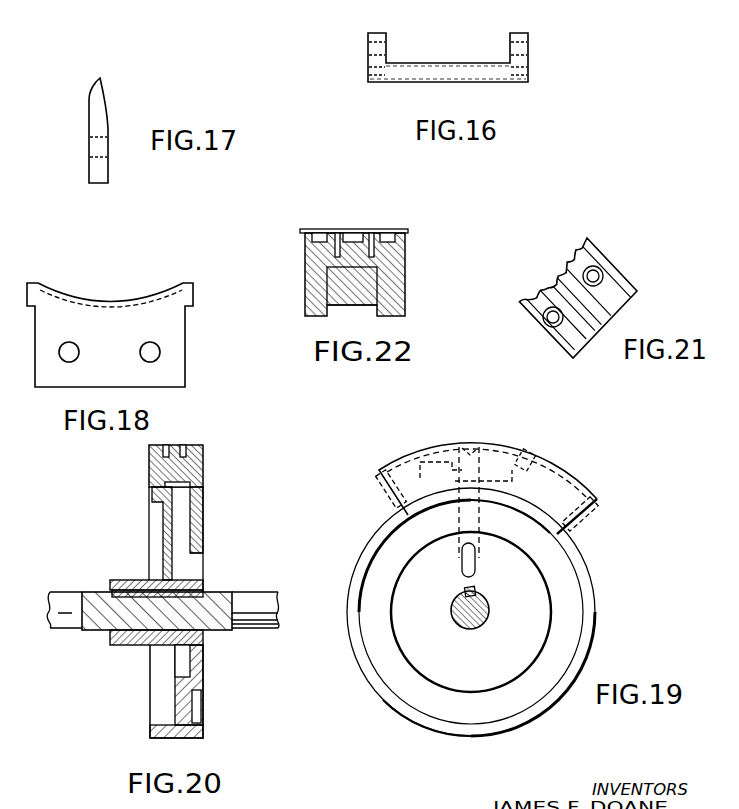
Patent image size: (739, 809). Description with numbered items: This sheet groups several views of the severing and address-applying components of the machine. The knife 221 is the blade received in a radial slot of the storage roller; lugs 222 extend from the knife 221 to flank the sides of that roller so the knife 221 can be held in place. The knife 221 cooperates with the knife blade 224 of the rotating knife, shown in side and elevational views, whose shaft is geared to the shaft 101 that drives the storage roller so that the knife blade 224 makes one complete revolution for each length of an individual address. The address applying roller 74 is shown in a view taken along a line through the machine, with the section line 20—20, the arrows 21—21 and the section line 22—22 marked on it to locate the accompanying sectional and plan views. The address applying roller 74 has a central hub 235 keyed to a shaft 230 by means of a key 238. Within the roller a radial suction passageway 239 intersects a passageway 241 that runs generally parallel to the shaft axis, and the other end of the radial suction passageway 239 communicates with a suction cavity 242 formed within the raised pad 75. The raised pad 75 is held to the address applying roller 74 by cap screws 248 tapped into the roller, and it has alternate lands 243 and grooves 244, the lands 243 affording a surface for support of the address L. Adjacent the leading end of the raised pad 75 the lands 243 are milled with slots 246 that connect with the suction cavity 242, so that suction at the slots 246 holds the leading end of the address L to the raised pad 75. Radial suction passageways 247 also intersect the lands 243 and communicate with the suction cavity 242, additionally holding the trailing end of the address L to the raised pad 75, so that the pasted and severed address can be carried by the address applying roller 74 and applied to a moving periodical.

In FIG. 16, the knife 221 is at (432, 63).
In FIG. 16, the lugs 222 is at (528, 36).
In FIG. 17, the knife blade 224 is at (100, 183).
In FIG. 18, the knife blade 224 is at (158, 381).
In FIG. 22, the lands 243 is at (320, 232).
In FIG. 22, the grooves 244 is at (330, 232).
In FIG. 22, the address L is at (392, 228).
In FIG. 21, the cap screws 248 is at (603, 274).
In FIG. 19, the cap screws 248 is at (395, 492).
In FIG. 20, the radial suction passageway 239 is at (190, 528).
In FIG. 19, the radial suction passageway 239 is at (478, 514).
In FIG. 20, the passageway 241 is at (205, 566).
In FIG. 19, the passageway 241 is at (473, 573).
In FIG. 20, the key 238 is at (206, 592).
In FIG. 19, the key 238 is at (478, 588).
In FIG. 20, the central hub 235 is at (128, 648).
In FIG. 20, the shaft 101 is at (258, 632).
In FIG. 19, the raised pad 75 is at (423, 462).
In FIG. 19, the slots 246 is at (470, 446).
In FIG. 19, the radial suction passageways 247 is at (528, 453).
In FIG. 19, the suction cavity 242 is at (457, 475).
In FIG. 19, the shaft 230 is at (483, 622).
In FIG. 19, the address applying roller 74 is at (596, 610).
In FIG. 19, the section line 20— 20 is at (492, 392).
In FIG. 19, the arrows 21— 21 is at (629, 500).
In FIG. 19, the section line 22— 22 is at (593, 467).